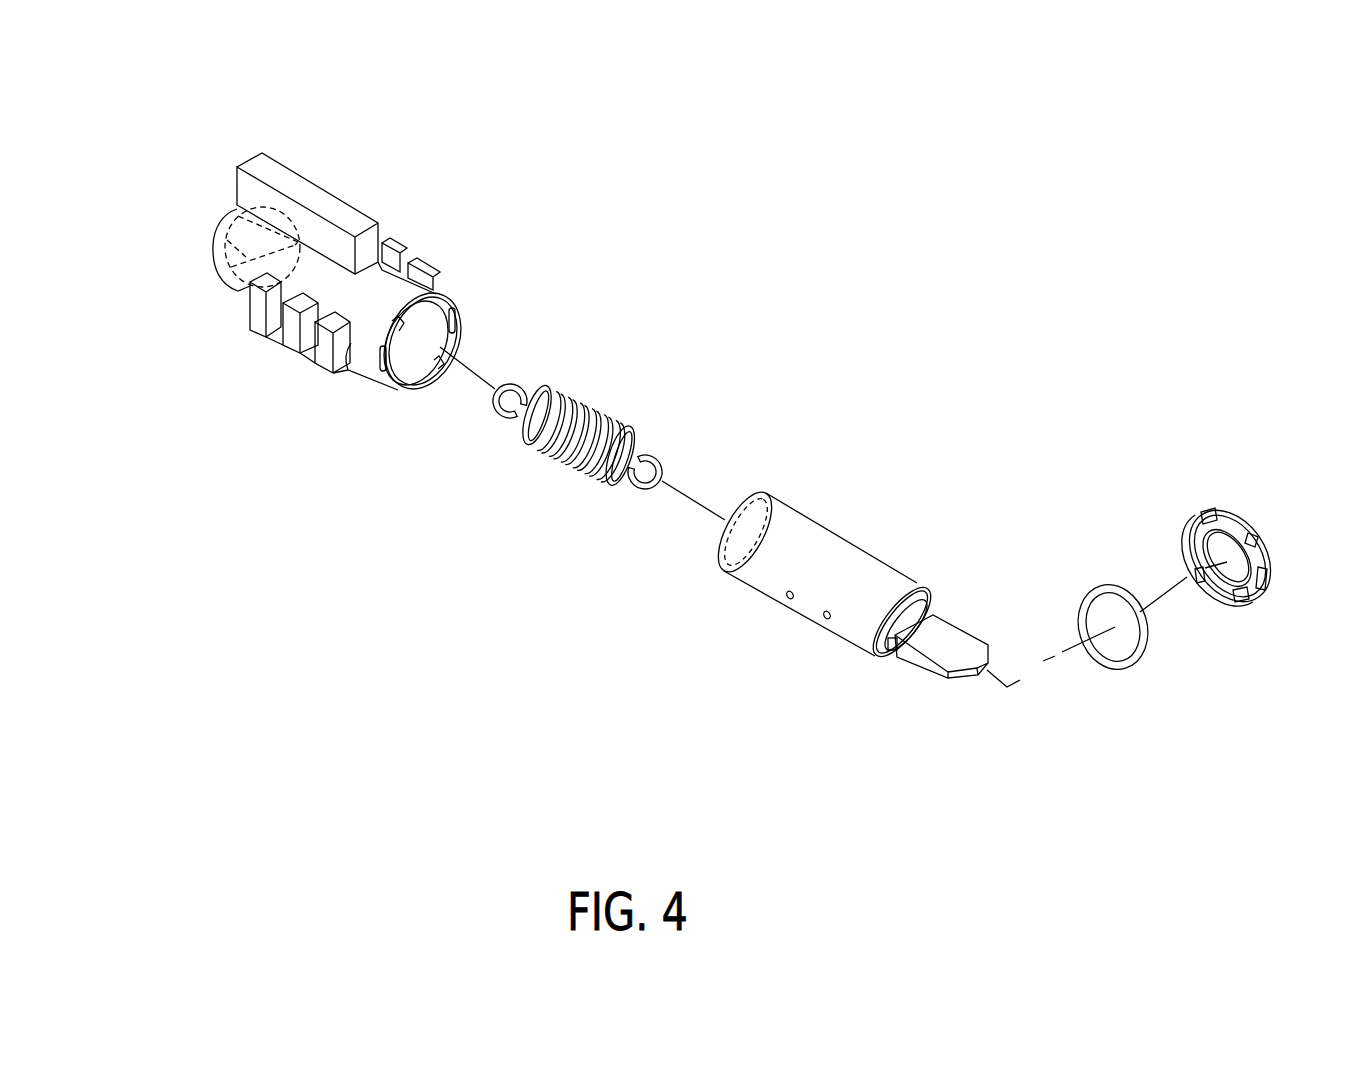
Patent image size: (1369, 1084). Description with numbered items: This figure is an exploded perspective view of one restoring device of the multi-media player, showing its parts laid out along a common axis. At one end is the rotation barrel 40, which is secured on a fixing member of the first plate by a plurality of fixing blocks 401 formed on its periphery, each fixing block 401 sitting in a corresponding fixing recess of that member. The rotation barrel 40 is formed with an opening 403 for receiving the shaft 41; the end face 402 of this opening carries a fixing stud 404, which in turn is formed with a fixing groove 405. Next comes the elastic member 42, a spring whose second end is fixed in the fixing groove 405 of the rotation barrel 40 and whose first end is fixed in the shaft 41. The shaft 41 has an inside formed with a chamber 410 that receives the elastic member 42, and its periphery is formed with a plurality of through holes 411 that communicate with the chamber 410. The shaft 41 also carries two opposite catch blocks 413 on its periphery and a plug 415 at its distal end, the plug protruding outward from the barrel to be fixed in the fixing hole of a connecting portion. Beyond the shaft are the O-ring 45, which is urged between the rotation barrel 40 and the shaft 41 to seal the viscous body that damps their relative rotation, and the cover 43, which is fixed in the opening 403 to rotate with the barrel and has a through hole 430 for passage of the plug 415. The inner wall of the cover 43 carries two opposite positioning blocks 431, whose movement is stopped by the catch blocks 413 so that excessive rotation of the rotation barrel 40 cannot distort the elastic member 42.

The rotation barrel 40 is at (349, 190).
The fixing blocks 401 is at (422, 267).
The end face 402 is at (216, 227).
The opening 403 is at (418, 376).
The fixing stud 404 is at (240, 235).
The fixing groove 405 is at (240, 258).
The elastic member 42 is at (583, 395).
The shaft 41 is at (837, 530).
The chamber 410 is at (737, 546).
The through holes 411 is at (827, 617).
The catch blocks 413 is at (887, 642).
The plug 415 is at (933, 652).
The O-ring 45 is at (1105, 590).
The cover 43 is at (1250, 513).
The through hole 430 is at (1217, 550).
The positioning blocks 431 is at (1211, 516).